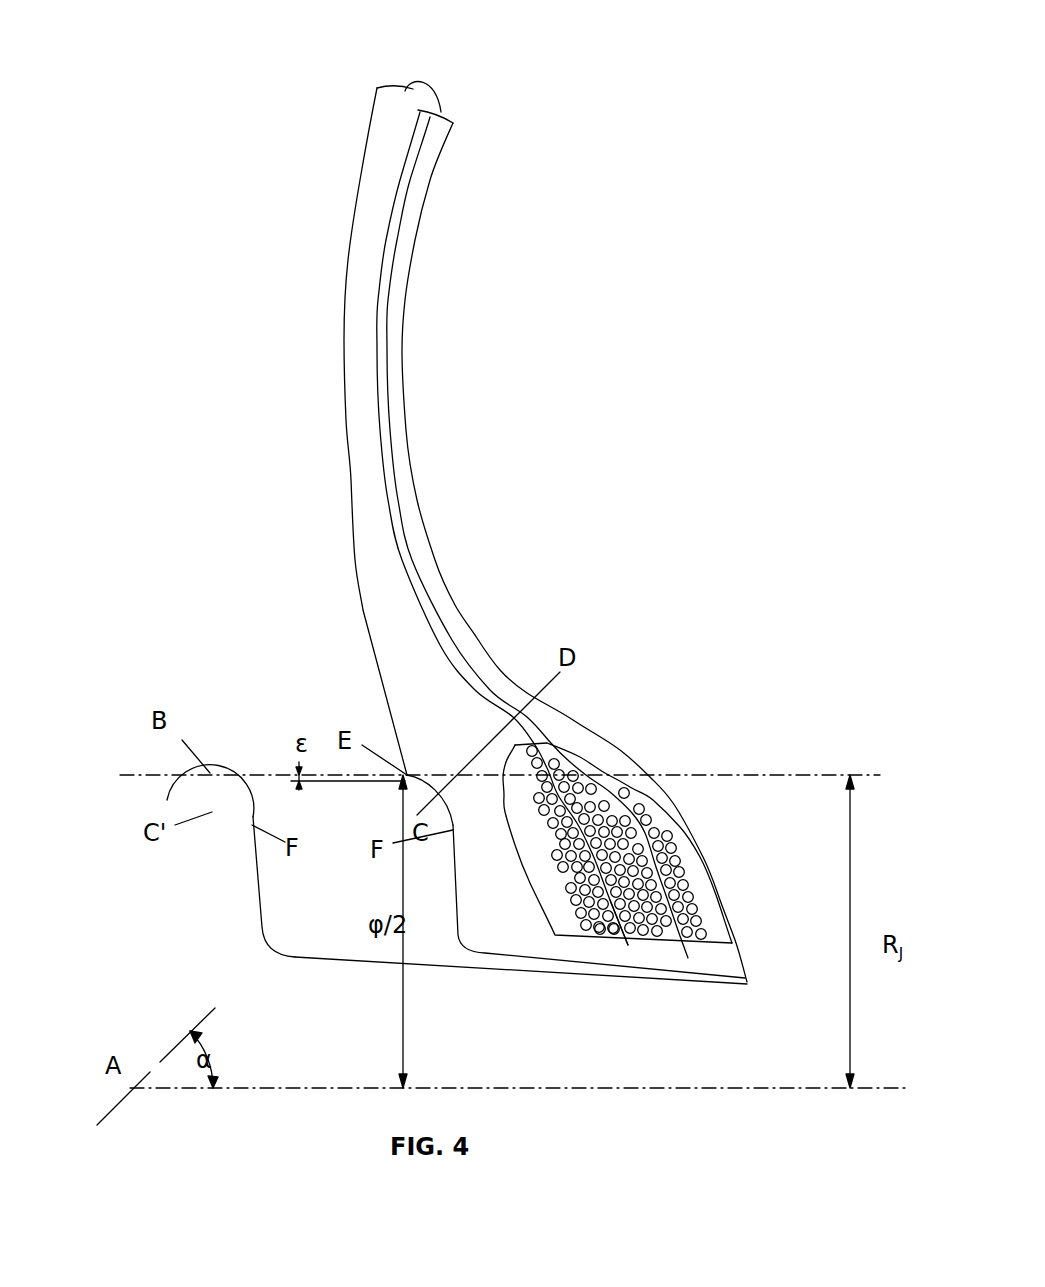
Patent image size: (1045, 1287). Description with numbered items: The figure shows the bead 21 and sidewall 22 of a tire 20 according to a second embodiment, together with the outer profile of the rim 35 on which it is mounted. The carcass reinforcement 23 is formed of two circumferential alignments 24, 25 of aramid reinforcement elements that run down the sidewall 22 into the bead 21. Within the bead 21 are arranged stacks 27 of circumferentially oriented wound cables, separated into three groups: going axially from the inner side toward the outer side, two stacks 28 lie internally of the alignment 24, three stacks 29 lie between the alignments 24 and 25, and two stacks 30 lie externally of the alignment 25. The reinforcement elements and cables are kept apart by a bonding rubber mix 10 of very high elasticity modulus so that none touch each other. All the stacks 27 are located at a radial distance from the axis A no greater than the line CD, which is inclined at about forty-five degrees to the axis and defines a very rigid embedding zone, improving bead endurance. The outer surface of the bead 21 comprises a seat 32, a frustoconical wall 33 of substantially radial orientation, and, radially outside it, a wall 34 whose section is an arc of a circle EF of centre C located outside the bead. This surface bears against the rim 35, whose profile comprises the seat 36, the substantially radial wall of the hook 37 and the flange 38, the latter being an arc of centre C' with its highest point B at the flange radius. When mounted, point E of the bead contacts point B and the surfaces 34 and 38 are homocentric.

The bonding rubber mix 10 is at (628, 840).
The tire 20 is at (710, 350).
The bead 21 is at (647, 792).
The sidewall 22 is at (351, 456).
The carcass reinforcement 23 is at (437, 92).
The circumferential alignment of reinforcement elements 24 is at (397, 265).
The circumferential alignment of reinforcement elements 25 is at (378, 342).
The stacks of cables 27 is at (595, 783).
The stacks 28 is at (728, 933).
The stacks 29 is at (663, 933).
The stacks 30 is at (604, 1010).
The seat 32 is at (628, 945).
The frustoconical wall 33 is at (453, 858).
The wall 34 is at (430, 790).
The rim 35 is at (391, 877).
The seat 36 is at (373, 965).
The hook 37 is at (255, 867).
The flange 38 is at (165, 797).